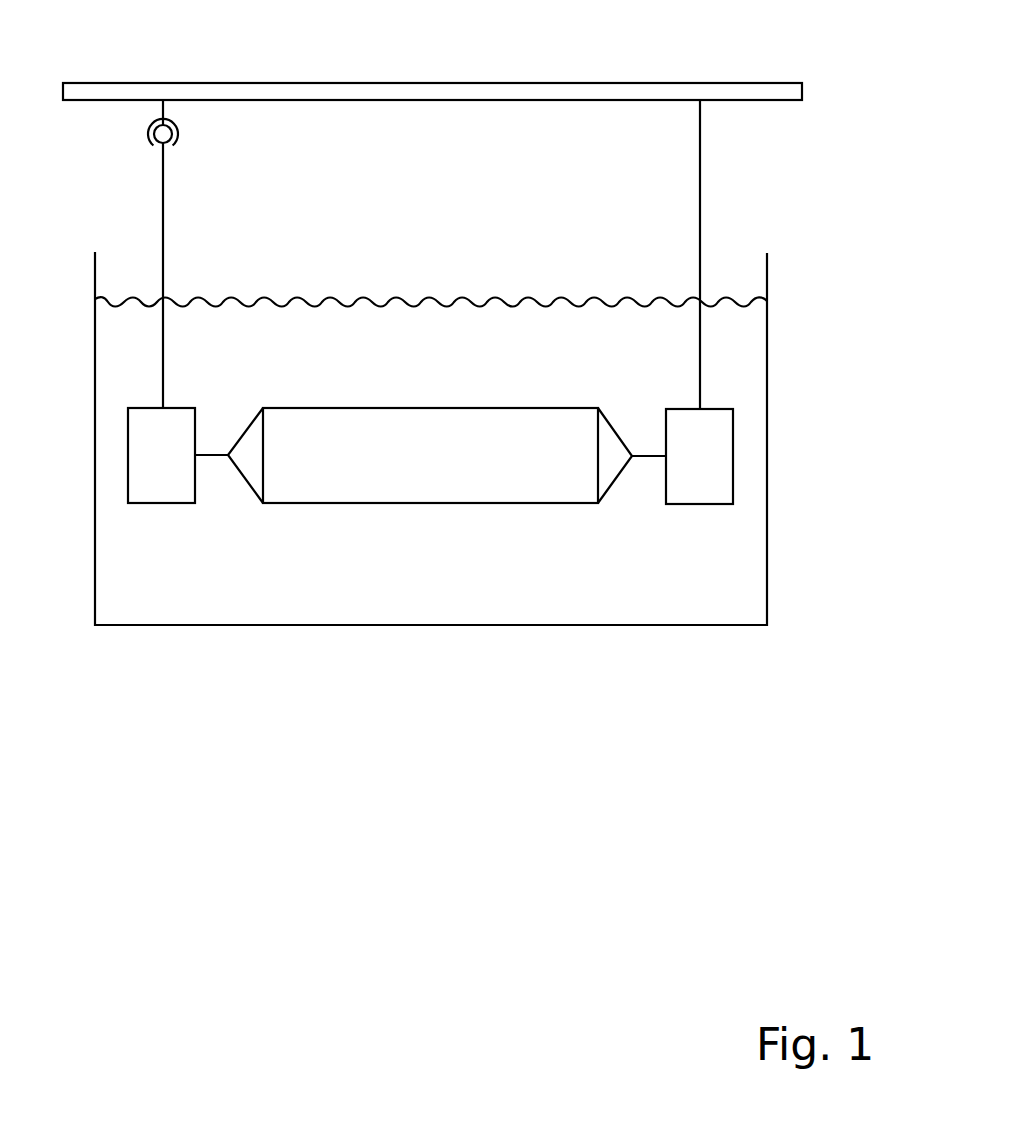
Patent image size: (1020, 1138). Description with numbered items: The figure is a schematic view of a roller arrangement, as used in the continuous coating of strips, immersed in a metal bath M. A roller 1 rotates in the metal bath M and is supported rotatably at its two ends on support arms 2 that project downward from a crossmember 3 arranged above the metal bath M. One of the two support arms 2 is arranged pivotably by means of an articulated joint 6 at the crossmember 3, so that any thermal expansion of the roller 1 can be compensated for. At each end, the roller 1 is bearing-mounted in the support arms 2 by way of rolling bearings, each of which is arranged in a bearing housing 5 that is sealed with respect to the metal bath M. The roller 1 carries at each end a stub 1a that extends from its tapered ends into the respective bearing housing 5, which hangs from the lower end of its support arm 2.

The roller 1 is at (472, 490).
The shaft / axle of the body 1a is at (217, 458).
The support arm 2 is at (165, 265).
The crossmember 3 is at (583, 83).
The bearing housing 5 is at (700, 460).
The articulated joint 6 is at (172, 120).
The metal bath M is at (700, 572).